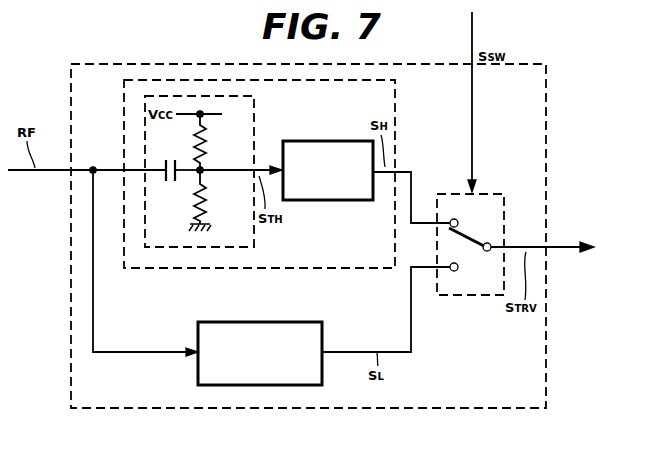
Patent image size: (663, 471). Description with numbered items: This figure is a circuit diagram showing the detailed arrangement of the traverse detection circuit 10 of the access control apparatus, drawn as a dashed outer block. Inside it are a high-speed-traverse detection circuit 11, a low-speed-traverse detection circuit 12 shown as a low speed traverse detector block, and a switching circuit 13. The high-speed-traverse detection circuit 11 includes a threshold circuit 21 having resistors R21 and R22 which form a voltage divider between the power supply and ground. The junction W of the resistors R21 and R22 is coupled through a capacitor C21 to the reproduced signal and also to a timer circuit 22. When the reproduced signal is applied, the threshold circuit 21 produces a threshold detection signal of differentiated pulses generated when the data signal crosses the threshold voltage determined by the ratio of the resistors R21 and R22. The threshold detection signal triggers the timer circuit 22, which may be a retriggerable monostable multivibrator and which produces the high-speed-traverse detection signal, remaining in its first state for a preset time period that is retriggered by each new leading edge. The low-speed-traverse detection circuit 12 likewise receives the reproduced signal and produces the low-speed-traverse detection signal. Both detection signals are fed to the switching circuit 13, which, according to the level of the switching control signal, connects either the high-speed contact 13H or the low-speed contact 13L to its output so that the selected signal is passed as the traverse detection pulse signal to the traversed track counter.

The traverse detection circuit 10 is at (98, 409).
The high-speed-traverse detection circuit 11 is at (148, 269).
The low-speed-traverse detection circuit 12 is at (323, 332).
The switching circuit 13 is at (470, 263).
The high-speed contact of switching circuit 13H is at (458, 221).
The low-speed contact of switching circuit 13L is at (458, 268).
The threshold circuit 21 is at (255, 123).
The timer circuit 22 is at (330, 201).
The resistor R21 is at (207, 147).
The resistor R22 is at (207, 201).
The capacitor C21 is at (164, 181).
The junction W is at (205, 172).